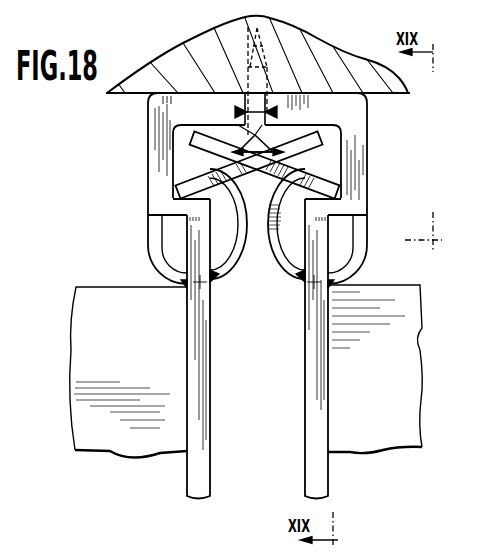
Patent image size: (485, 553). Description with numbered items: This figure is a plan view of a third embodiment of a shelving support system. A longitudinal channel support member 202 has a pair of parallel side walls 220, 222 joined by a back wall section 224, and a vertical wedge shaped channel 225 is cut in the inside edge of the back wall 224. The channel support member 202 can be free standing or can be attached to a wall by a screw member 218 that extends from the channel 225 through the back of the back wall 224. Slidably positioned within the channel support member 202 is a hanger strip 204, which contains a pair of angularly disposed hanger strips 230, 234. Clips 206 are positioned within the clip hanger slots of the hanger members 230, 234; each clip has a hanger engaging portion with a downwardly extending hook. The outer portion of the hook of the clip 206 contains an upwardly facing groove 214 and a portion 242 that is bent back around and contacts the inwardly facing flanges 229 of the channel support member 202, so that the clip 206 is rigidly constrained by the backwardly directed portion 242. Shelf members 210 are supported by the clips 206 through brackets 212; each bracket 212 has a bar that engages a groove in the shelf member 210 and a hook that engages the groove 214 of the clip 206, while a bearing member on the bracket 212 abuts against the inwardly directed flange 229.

The longitudinal channel support member 202 is at (153, 95).
The hanger strip 204 is at (278, 161).
The clip 206 is at (216, 282).
The shelf member 210 is at (410, 340).
The bracket 212 is at (304, 382).
The upwardly facing groove 214 is at (308, 279).
The screw member 218 is at (268, 67).
The side wall 220 is at (149, 145).
The side wall 222 is at (368, 180).
The back wall section 224 is at (215, 93).
The vertical wedge shaped channel 225 is at (280, 103).
The inwardly facing flange 229 is at (150, 213).
The hanger strip 230 is at (150, 191).
The hanger strip 234 is at (342, 181).
The backwardly directed portion 242 is at (150, 251).